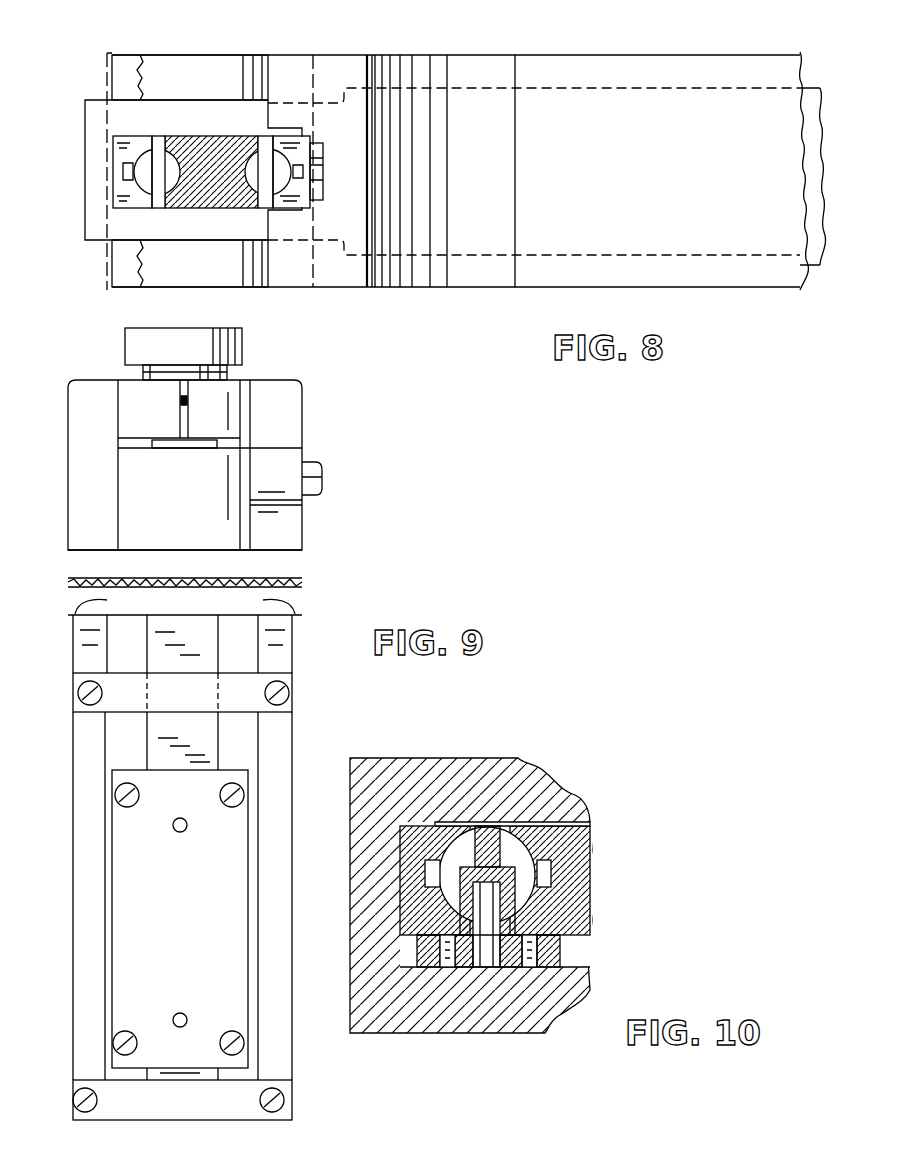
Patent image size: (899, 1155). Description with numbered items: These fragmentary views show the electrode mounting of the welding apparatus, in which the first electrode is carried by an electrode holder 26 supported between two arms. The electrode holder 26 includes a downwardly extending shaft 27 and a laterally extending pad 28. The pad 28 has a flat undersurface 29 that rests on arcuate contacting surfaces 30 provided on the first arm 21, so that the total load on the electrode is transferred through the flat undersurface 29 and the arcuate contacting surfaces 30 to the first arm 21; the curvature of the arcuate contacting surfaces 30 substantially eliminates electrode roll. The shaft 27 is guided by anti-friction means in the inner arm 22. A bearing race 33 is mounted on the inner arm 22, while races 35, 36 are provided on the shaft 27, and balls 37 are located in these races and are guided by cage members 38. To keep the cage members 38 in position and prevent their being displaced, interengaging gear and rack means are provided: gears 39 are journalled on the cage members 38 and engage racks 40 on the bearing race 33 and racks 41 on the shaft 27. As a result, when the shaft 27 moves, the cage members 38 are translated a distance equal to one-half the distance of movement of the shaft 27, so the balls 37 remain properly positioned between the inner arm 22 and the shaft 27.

In FIG. 8, the first arm 21 is at (636, 56).
In FIG. 8, the inner arm 22 is at (810, 90).
In FIG. 9, the electrode holder 26 is at (130, 495).
In FIG. 8, the shaft 27 is at (206, 203).
In FIG. 10, the shaft 27 is at (585, 850).
In FIG. 9, the pad 28 is at (72, 593).
In FIG. 9, the flat undersurface 29 is at (80, 607).
In FIG. 8, the arcuate contacting surfaces 30 is at (233, 68).
In FIG. 9, the arcuate contacting surfaces 30 is at (83, 627).
In FIG. 8, the bearing race 33 is at (120, 150).
In FIG. 9, the bearing race 33 is at (160, 725).
In FIG. 10, the bearing race 33 is at (418, 840).
In FIG. 8, the race 35 is at (175, 143).
In FIG. 8, the race 36 is at (248, 143).
In FIG. 10, the balls 37 is at (540, 893).
In FIG. 10, the cage members 38 is at (488, 830).
In FIG. 10, the gears 39 is at (463, 968).
In FIG. 10, the racks 40 is at (420, 968).
In FIG. 10, the racks 41 is at (548, 970).